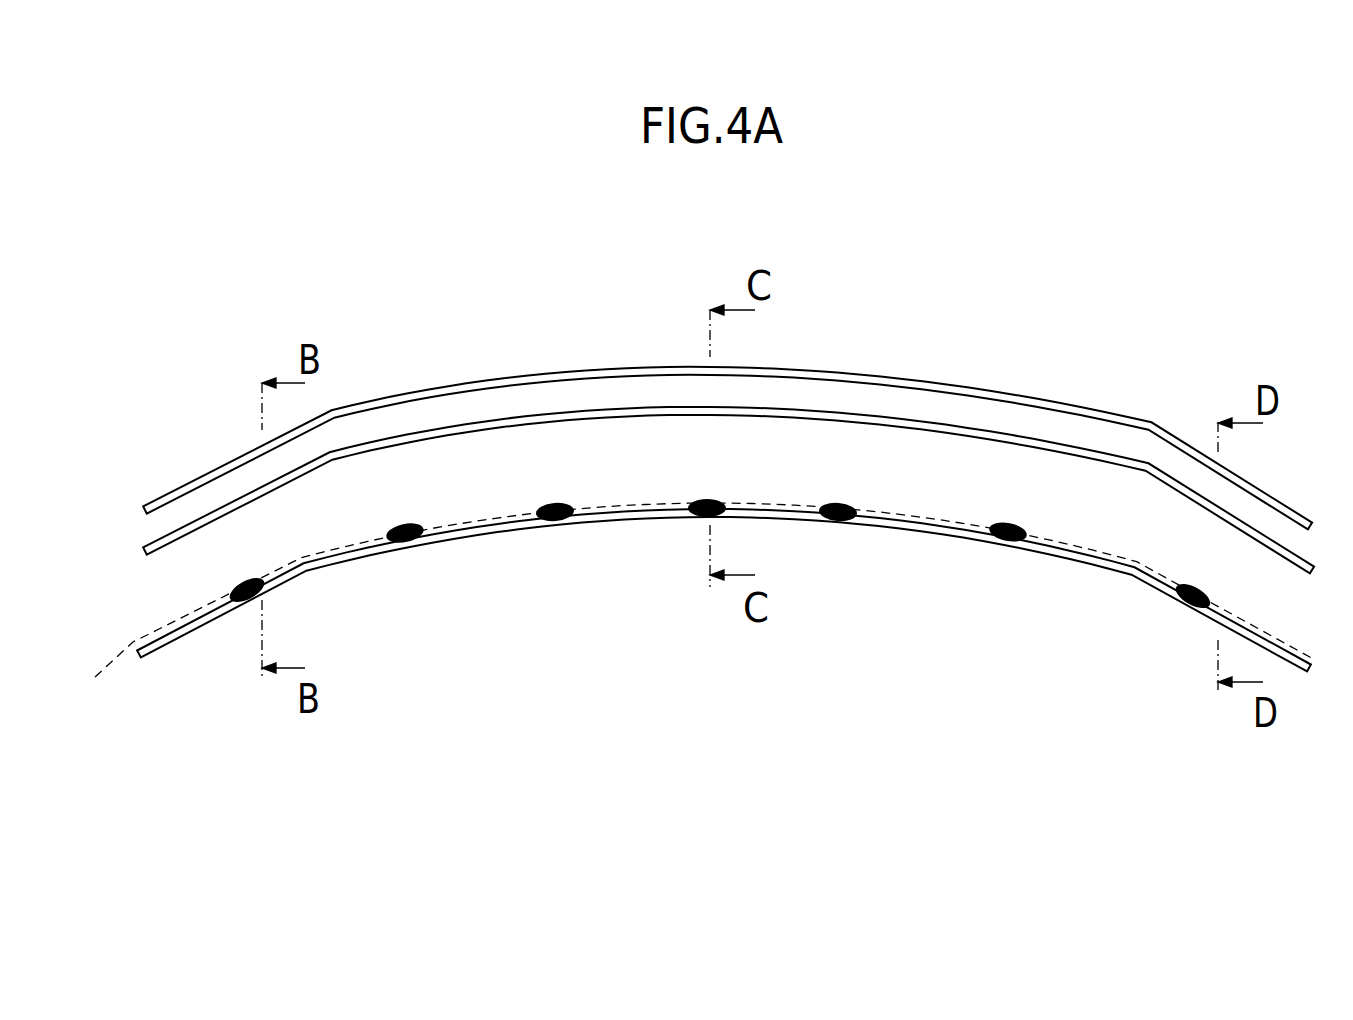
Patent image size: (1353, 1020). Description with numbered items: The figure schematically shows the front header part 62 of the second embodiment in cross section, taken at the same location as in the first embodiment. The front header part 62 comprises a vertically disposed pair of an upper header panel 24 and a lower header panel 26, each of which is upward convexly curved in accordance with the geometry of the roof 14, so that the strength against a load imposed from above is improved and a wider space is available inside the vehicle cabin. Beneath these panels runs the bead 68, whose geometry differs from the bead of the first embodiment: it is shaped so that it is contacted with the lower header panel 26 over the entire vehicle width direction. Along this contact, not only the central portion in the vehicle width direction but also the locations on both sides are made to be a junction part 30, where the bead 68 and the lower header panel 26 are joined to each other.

The roof 14 is at (1062, 398).
The upper header panel 24 is at (142, 545).
The lower header panel 26 is at (178, 643).
The junction part 30 is at (413, 524).
The front header part 62 is at (1160, 350).
The bead 68 is at (680, 602).